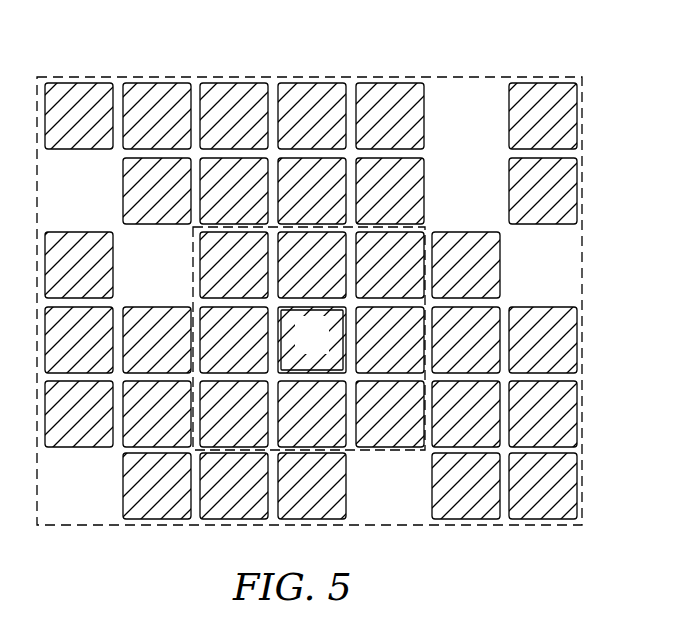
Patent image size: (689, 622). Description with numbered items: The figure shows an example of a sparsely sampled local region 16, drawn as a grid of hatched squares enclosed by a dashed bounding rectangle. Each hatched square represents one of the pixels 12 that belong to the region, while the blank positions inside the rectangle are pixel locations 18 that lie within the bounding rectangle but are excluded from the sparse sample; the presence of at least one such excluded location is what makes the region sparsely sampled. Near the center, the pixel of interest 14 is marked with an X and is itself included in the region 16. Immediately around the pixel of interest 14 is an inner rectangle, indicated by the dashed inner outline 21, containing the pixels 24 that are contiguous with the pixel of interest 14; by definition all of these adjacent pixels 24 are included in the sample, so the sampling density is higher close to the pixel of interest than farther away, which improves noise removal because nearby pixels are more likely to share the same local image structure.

The pixels 12 is at (311, 262).
The pixel of interest 14 is at (317, 377).
The sparsely sampled local region 16 is at (597, 408).
The pixel locations 18 is at (452, 157).
The selected region of dies 21 is at (352, 448).
The pixels contiguous with the pixel of interest 24 is at (332, 247).